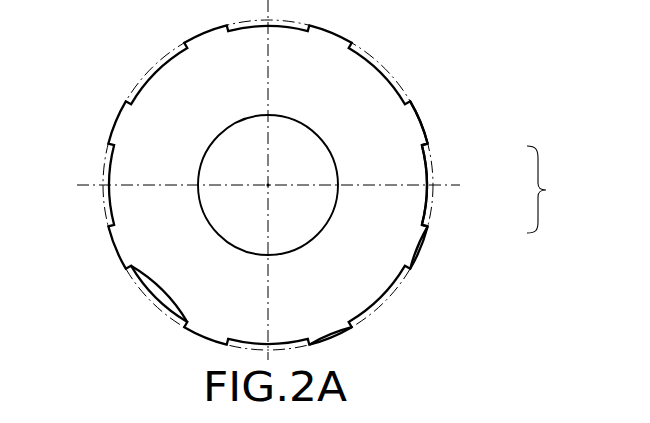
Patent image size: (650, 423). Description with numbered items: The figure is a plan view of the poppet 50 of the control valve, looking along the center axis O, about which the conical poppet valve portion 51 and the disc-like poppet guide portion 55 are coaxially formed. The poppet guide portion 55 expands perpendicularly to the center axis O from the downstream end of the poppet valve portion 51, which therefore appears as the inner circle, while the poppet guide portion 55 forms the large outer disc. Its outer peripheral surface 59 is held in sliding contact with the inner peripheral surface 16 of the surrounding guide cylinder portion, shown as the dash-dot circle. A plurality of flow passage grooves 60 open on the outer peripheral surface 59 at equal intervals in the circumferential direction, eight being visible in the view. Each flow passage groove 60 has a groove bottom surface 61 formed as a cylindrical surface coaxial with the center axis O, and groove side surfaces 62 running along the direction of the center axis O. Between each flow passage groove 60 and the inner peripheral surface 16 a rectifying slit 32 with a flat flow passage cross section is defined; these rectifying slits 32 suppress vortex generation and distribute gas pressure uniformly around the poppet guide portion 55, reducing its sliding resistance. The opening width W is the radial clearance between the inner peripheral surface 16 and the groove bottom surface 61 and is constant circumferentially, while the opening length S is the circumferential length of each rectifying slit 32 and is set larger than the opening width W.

The inner peripheral surface 16 is at (397, 82).
The poppet 50 is at (119, 109).
The poppet valve portion 51 is at (334, 149).
The poppet guide portion 55 is at (414, 135).
The outer peripheral surface 59 is at (346, 332).
The flow passage groove 60 is at (552, 189).
The groove bottom surface 61 is at (427, 190).
The groove side surface 62 is at (428, 150).
The rectifying slit 32 is at (141, 289).
The center axis O is at (268, 185).
The opening length S is at (117, 142).
The opening width W is at (178, 92).